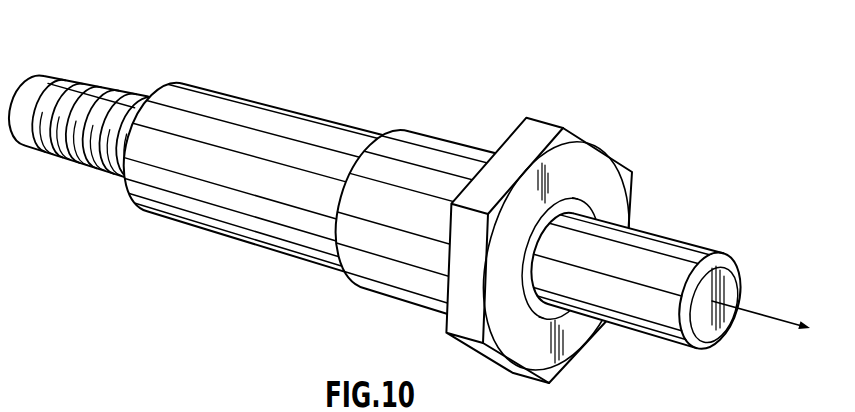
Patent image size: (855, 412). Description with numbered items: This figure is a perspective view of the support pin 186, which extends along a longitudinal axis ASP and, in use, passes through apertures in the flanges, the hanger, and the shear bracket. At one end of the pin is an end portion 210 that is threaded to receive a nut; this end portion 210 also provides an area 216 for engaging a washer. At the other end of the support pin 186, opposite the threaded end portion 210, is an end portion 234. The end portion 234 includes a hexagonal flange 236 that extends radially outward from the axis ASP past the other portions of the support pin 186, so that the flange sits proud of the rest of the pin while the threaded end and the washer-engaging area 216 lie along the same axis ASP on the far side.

The end portion 210 is at (103, 57).
The area 216 is at (136, 106).
The support pin 186 is at (741, 131).
The hexagonal flange 236 is at (547, 124).
The end portion 234 is at (736, 216).
The longitudinal axis ASP is at (771, 312).